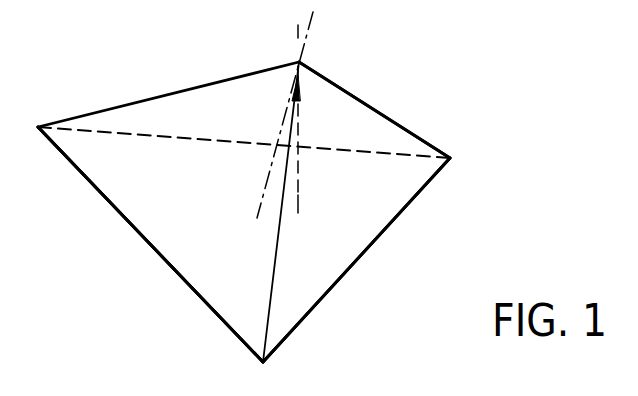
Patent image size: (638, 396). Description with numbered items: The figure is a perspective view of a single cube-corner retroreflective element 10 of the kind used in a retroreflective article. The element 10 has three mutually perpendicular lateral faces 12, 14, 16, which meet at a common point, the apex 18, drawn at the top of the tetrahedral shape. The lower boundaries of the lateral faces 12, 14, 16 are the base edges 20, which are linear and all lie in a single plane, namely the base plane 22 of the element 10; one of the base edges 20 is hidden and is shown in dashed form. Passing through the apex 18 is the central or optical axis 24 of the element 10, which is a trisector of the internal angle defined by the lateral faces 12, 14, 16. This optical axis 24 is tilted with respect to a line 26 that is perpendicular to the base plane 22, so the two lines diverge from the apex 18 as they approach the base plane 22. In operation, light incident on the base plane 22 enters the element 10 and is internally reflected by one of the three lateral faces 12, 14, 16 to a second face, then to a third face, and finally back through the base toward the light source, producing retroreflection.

The cube-corner retroreflective element 10 is at (116, 93).
The lateral face 12 is at (178, 240).
The lateral face 14 is at (362, 123).
The lateral face 16 is at (323, 270).
The apex 18 is at (299, 62).
The base edges 20 is at (219, 315).
The base plane 22 is at (134, 209).
The optical axis 24 is at (310, 30).
The line perpendicular to the base plane 26 is at (300, 201).